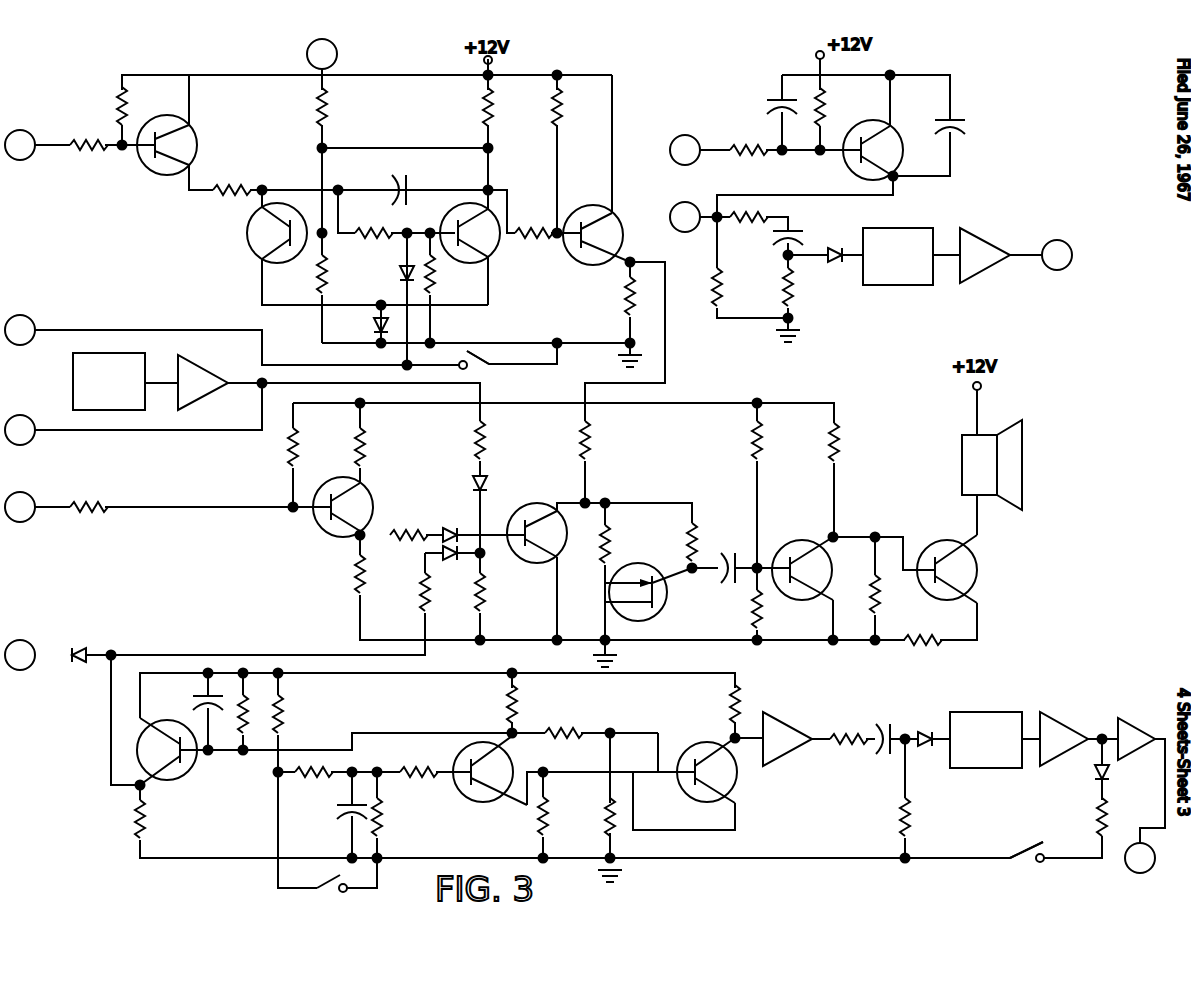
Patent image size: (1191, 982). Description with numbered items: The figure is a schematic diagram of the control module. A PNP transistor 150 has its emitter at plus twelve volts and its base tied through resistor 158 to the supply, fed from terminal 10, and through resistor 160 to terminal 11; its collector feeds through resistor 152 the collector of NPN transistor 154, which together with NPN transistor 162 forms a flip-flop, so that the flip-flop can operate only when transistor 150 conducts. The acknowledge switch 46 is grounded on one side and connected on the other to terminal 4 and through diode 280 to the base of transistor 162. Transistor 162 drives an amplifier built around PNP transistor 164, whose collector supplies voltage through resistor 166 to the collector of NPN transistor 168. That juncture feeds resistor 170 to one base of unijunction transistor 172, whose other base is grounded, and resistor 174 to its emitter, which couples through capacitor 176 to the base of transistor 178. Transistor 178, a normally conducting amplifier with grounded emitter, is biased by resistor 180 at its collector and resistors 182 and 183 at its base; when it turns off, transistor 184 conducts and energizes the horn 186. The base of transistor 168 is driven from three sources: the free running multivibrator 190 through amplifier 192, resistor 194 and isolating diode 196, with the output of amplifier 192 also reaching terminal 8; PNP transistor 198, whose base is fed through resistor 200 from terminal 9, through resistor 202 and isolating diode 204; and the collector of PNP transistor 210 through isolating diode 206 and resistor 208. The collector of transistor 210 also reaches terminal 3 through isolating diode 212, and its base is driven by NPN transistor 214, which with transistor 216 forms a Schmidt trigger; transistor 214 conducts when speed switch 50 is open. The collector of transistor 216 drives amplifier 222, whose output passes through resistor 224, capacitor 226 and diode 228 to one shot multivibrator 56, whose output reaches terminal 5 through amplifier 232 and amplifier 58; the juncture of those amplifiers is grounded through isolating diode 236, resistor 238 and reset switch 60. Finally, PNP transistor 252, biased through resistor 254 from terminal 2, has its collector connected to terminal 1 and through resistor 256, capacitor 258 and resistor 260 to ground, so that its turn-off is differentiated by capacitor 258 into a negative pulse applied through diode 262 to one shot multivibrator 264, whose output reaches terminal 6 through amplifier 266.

The terminal 1 is at (685, 217).
The terminal 2 is at (685, 150).
The terminal 3 is at (20, 655).
The terminal 4 is at (20, 330).
The terminal 5 is at (1140, 858).
The terminal 6 is at (1057, 255).
The terminal 8 is at (20, 430).
The terminal 9 is at (20, 507).
The terminal 10 is at (322, 54).
The terminal 11 is at (20, 145).
The acknowledge switch 46 is at (481, 355).
The speed switch 50 is at (338, 878).
The one shot multivibrator 56 is at (1000, 768).
The amplifier 58 is at (1136, 755).
The reset switch 60 is at (1022, 862).
The PNP transistor 150 is at (197, 130).
The resistor 152 is at (228, 185).
The NPN transistor 154 is at (247, 235).
The resistor 158 is at (119, 100).
The resistor 160 is at (95, 152).
The NPN transistor 162 is at (502, 258).
The PNP transistor 164 is at (624, 239).
The resistor 166 is at (594, 448).
The NPN transistor 168 is at (540, 563).
The resistor 170 is at (614, 546).
The unijunction transistor 172 is at (660, 612).
The resistor 174 is at (701, 537).
The capacitor 176 is at (722, 584).
The transistor 178 is at (814, 540).
The resistor 180 is at (843, 438).
The resistor 182 is at (764, 435).
The resistor 183 is at (764, 615).
The transistor 184 is at (979, 570).
The horn 186 is at (962, 479).
The free running multivibrator 190 is at (73, 372).
The amplifier 192 is at (215, 395).
The resistor 194 is at (493, 447).
The isolating diode 196 is at (493, 484).
The PNP transistor 198 is at (372, 492).
The resistor 200 is at (97, 497).
The resistor 202 is at (408, 527).
The isolating diode 204 is at (450, 527).
The isolating diode 206 is at (450, 561).
The resistor 208 is at (419, 595).
The PNP transistor 210 is at (170, 780).
The isolating diode 212 is at (80, 663).
The NPN transistor 214 is at (485, 800).
The transistor 216 is at (734, 790).
The amplifier 222 is at (797, 749).
The resistor 224 is at (850, 717).
The capacitor 226 is at (884, 752).
The diode 228 is at (925, 730).
The amplifier 232 is at (1072, 730).
The isolating diode 236 is at (1095, 775).
The resistor 238 is at (1110, 808).
The PNP transistor 252 is at (855, 128).
The resistor 254 is at (750, 158).
The resistor 256 is at (758, 217).
The capacitor 258 is at (798, 245).
The resistor 260 is at (795, 305).
The diode 262 is at (833, 265).
The one shot multivibrator 264 is at (930, 228).
The amplifier 266 is at (985, 280).
The diode 280 is at (399, 272).